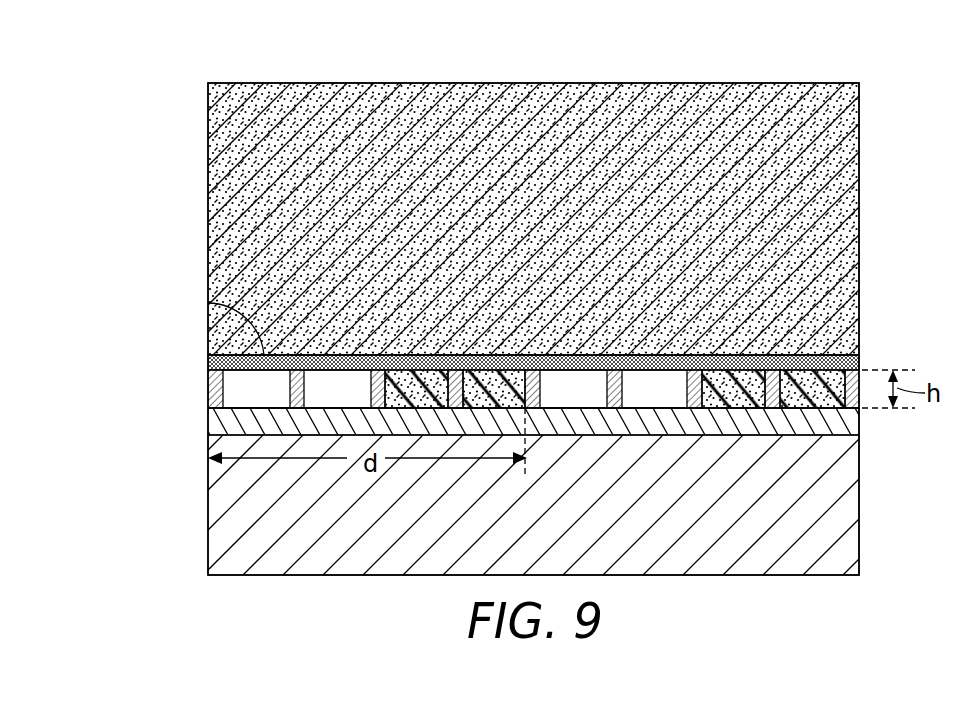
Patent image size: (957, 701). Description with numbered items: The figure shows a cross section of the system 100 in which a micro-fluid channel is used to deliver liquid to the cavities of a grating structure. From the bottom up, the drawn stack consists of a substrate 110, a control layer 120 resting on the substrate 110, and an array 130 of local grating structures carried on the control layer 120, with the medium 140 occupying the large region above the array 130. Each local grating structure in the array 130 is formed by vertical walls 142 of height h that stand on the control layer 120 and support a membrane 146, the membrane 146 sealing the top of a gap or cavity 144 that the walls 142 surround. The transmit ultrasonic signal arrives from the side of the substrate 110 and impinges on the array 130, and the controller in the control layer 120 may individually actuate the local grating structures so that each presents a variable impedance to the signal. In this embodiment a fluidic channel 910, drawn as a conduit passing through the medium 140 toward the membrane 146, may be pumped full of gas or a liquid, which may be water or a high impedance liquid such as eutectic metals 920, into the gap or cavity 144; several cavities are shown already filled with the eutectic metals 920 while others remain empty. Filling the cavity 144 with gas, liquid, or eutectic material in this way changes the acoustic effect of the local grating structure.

The system 100 is at (560, 56).
The substrate 110 is at (208, 503).
The control layer 120 is at (208, 422).
The array of local grating structures 130 is at (118, 333).
The medium 140 is at (208, 219).
The vertical walls 142 is at (198, 389).
The gap or cavity 144 is at (232, 396).
The membrane 146 is at (208, 362).
The fluidic channel 910 is at (208, 303).
The eutectic metals 920 is at (411, 368).